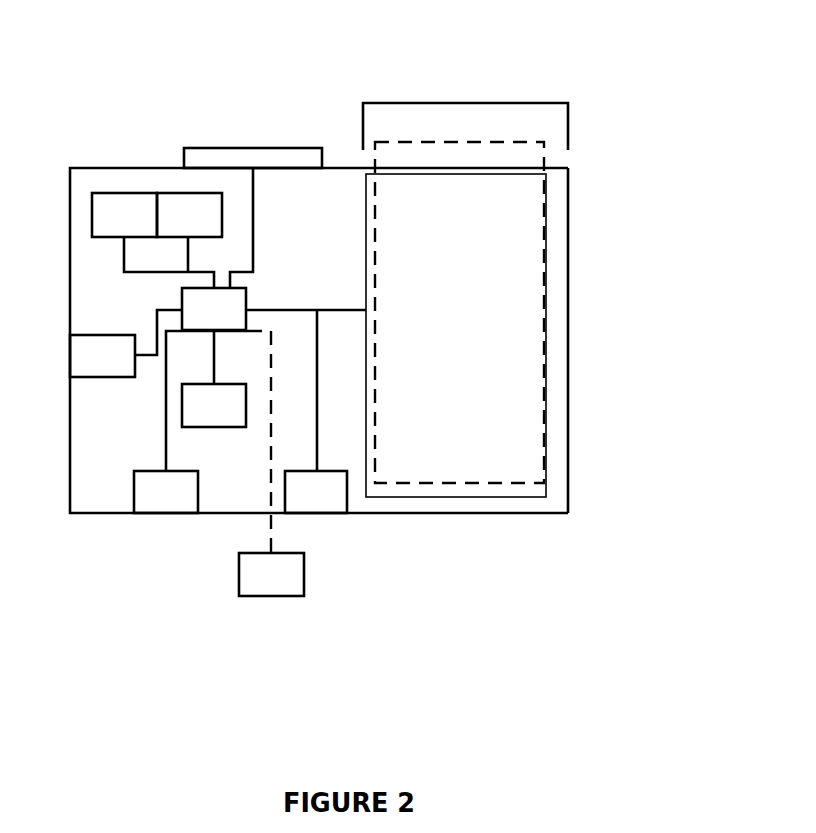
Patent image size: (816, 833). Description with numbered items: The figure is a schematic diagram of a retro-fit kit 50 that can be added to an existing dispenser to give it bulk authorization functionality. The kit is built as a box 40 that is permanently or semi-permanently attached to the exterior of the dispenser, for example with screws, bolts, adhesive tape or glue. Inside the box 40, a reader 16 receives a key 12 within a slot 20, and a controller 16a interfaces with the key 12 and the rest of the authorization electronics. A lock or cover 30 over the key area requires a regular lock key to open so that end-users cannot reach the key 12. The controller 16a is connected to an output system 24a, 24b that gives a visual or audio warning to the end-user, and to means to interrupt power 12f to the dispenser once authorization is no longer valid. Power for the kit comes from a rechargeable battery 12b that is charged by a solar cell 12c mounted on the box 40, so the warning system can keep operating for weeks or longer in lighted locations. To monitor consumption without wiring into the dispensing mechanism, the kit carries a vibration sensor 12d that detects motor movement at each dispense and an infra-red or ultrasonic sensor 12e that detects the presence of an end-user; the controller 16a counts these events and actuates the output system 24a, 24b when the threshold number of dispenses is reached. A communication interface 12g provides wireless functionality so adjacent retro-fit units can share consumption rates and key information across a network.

The retro-fit kit 50 is at (154, 132).
The box 40 is at (568, 245).
The solar cell 12c is at (253, 148).
The lock or cover 30 is at (458, 102).
The key 12 is at (460, 312).
The slot 20 is at (457, 497).
The reader 16 is at (226, 489).
The controller 16a is at (214, 309).
The output system 24a is at (124, 215).
The output system 24b is at (189, 215).
The vibration sensor 12d is at (102, 356).
The rechargeable battery 12b is at (214, 405).
The infra-red or ultrasonic sensor 12e is at (166, 492).
The communication interface 12g is at (316, 492).
The means to interrupt power 12f is at (271, 574).